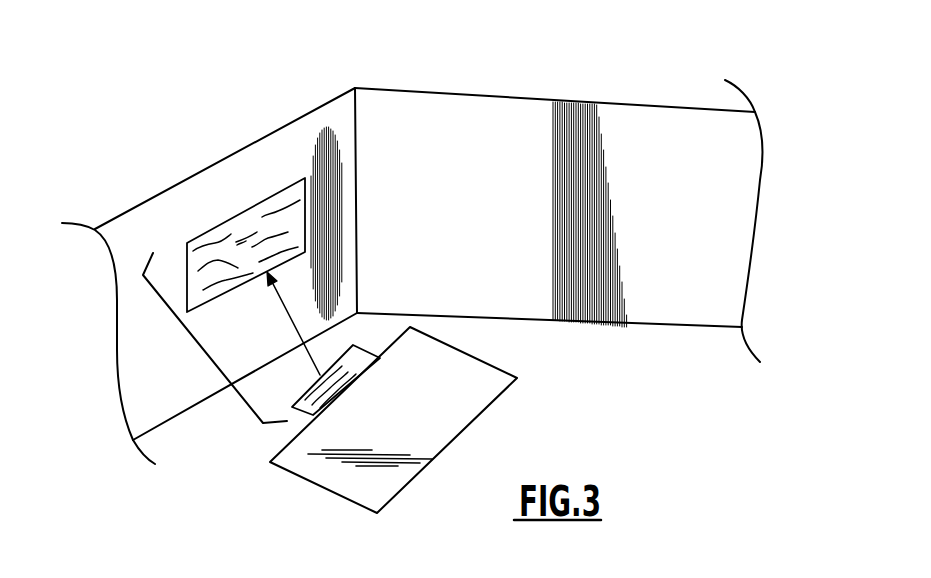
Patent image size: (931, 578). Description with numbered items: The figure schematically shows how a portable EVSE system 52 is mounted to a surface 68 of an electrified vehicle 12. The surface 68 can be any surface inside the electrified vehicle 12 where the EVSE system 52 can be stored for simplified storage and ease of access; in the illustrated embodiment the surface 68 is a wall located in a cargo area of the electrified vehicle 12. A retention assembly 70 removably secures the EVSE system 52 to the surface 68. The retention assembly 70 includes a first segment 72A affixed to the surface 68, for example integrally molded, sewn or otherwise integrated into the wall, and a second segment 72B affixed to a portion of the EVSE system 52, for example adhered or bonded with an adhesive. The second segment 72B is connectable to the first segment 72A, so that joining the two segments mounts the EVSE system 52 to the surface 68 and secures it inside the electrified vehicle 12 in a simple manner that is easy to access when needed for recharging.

The electrified vehicle 12 is at (574, 97).
The surface 68 is at (222, 183).
The retention assembly 70 is at (213, 360).
The first segment 72A is at (305, 206).
The second segment 72B is at (365, 349).
The portable EVSE system 52 is at (494, 402).